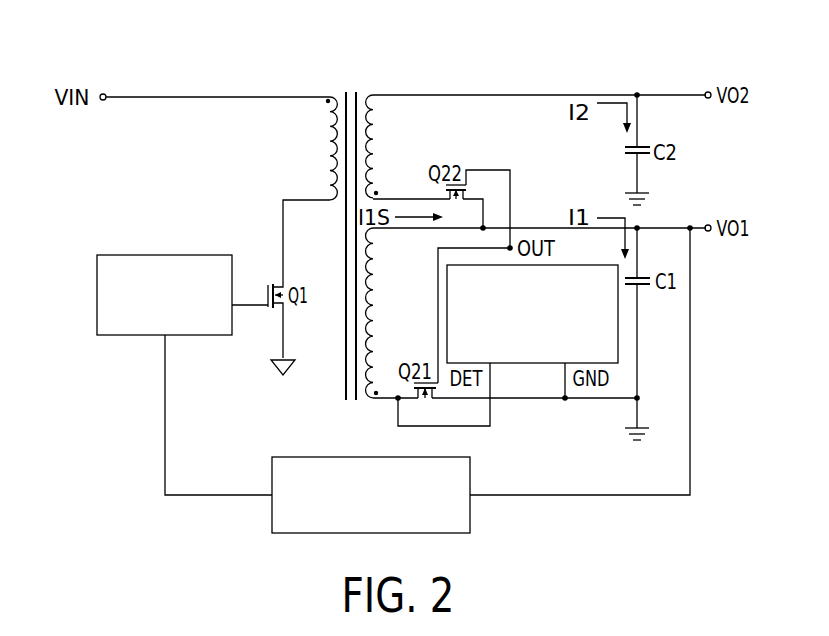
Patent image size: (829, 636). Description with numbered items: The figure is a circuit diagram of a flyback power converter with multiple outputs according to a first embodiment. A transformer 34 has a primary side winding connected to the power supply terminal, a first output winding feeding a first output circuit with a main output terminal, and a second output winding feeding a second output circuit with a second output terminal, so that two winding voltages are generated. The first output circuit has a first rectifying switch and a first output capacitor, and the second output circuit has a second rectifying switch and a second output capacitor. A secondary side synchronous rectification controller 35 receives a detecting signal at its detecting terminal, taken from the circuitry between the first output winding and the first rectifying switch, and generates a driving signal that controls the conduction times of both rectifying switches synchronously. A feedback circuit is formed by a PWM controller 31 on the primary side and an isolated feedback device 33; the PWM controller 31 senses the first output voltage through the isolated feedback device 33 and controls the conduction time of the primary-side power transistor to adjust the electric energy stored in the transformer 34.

The PWM controller 31 is at (163, 253).
The isolated feedback device 33 is at (342, 457).
The transformer 34 is at (354, 70).
The secondary side synchronous rectification controller 35 is at (536, 365).